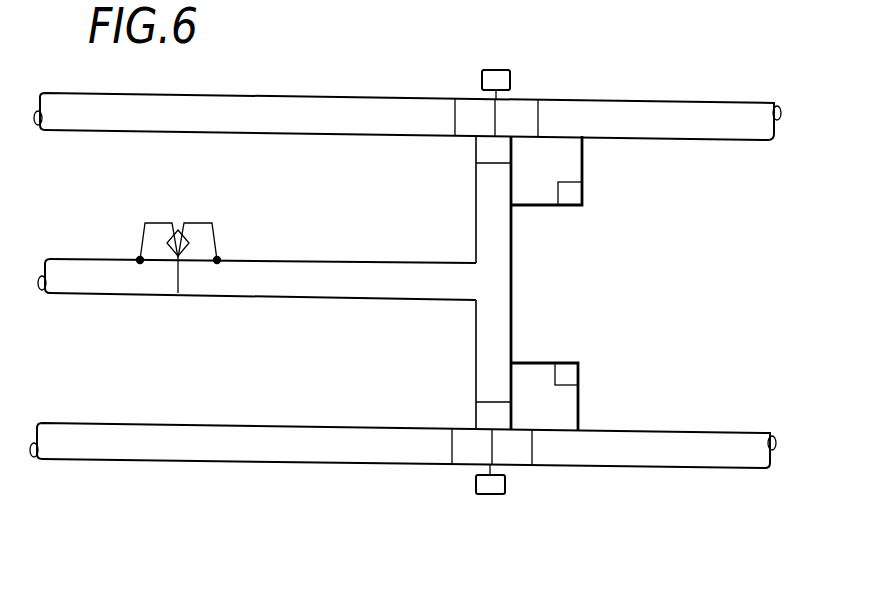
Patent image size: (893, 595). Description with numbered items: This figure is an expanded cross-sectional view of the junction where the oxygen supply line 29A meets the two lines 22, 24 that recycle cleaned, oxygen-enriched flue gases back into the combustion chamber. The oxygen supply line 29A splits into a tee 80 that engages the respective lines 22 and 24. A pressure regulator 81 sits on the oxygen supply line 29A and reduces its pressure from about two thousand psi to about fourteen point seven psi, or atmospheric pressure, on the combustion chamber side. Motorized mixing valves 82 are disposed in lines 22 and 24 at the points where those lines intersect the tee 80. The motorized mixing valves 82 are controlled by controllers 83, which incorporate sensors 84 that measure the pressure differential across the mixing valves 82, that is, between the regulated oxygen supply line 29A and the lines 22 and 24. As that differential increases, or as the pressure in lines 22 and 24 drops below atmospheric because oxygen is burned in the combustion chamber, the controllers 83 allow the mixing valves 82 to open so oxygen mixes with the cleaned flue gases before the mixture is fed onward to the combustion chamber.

The line 22 is at (707, 110).
The line 24 is at (703, 462).
The oxygen supply line 29A is at (325, 290).
The tee 80 is at (500, 290).
The pressure regulator 81 is at (197, 221).
The motorized mixing valve 82 is at (507, 70).
The controller 83 is at (563, 172).
The sensor 84 is at (582, 153).